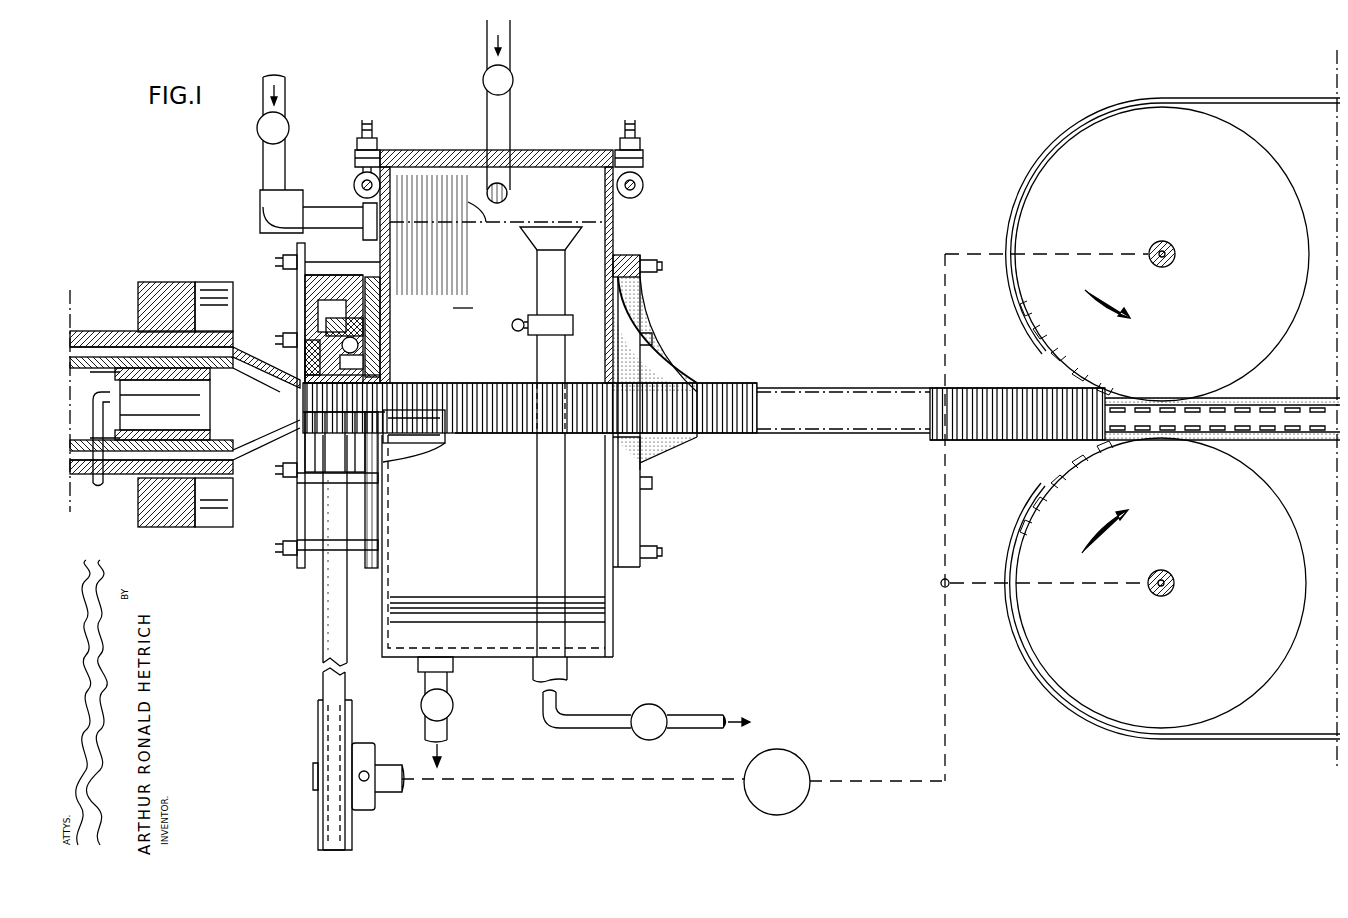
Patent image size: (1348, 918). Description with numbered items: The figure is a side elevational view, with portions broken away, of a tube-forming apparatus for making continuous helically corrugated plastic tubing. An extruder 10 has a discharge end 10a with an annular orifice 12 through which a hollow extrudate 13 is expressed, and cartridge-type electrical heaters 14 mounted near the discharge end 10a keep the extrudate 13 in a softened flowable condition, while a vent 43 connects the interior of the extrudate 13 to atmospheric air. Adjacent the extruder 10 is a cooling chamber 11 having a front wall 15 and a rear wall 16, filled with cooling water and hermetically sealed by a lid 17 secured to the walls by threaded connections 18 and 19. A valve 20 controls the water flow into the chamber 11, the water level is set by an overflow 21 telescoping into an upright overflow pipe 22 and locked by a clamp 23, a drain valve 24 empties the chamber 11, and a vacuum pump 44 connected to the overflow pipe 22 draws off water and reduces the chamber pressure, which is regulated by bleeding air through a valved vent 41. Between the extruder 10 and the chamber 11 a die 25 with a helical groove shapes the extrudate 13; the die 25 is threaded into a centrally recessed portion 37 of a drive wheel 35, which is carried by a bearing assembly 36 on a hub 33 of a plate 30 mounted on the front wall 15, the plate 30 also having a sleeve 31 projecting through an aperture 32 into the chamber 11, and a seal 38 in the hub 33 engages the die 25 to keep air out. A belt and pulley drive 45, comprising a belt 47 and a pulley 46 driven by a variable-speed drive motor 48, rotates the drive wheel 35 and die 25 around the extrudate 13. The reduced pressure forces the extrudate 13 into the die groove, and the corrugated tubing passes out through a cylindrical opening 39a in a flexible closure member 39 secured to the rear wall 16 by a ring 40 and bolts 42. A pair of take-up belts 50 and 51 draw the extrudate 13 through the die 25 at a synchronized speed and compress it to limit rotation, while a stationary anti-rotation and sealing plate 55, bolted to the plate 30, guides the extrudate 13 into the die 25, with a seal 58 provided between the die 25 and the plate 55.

The extruder 10 is at (185, 384).
The discharge end 10a is at (232, 480).
The cooling chamber 11 is at (552, 374).
The annular orifice 12 is at (238, 360).
The extrudate 13 is at (245, 440).
The cartridge-type electrical heaters 14 is at (170, 385).
The front wall 15 is at (385, 620).
The rear wall 16 is at (613, 235).
The lid 17 is at (430, 150).
The threaded connection 18 is at (367, 120).
The threaded connection 19 is at (632, 130).
The valve 20 is at (258, 135).
The overflow 21 is at (540, 266).
The overflow pipe 22 is at (537, 351).
The clamp 23 is at (530, 315).
The drain valve 24 is at (455, 712).
The die 25 is at (305, 356).
The plate 30 is at (372, 568).
The sleeve 31 is at (440, 445).
The aperture 32 is at (392, 290).
The hub 33 is at (350, 378).
The drive wheel 35 is at (312, 300).
The bearing assembly 36 is at (358, 345).
The centrally recessed portion 37 is at (315, 330).
The seal 38 is at (362, 362).
The flexible closure member 39 is at (707, 356).
The cylindrical opening 39a is at (750, 377).
The ring 40 is at (640, 258).
The valved vent 41 is at (513, 80).
The bolts 42 is at (662, 268).
The vent 43 is at (96, 486).
The vacuum pump 44 is at (664, 712).
The belt and pulley drive 45 is at (330, 622).
The pulley 46 is at (318, 713).
The belt 47 is at (323, 680).
The variable-speed drive motor 48 is at (780, 760).
The take-up belt 50 is at (1018, 320).
The take-up belt 51 is at (1032, 487).
The anti-rotation and sealing plate 55 is at (295, 530).
The seal 58 is at (300, 392).